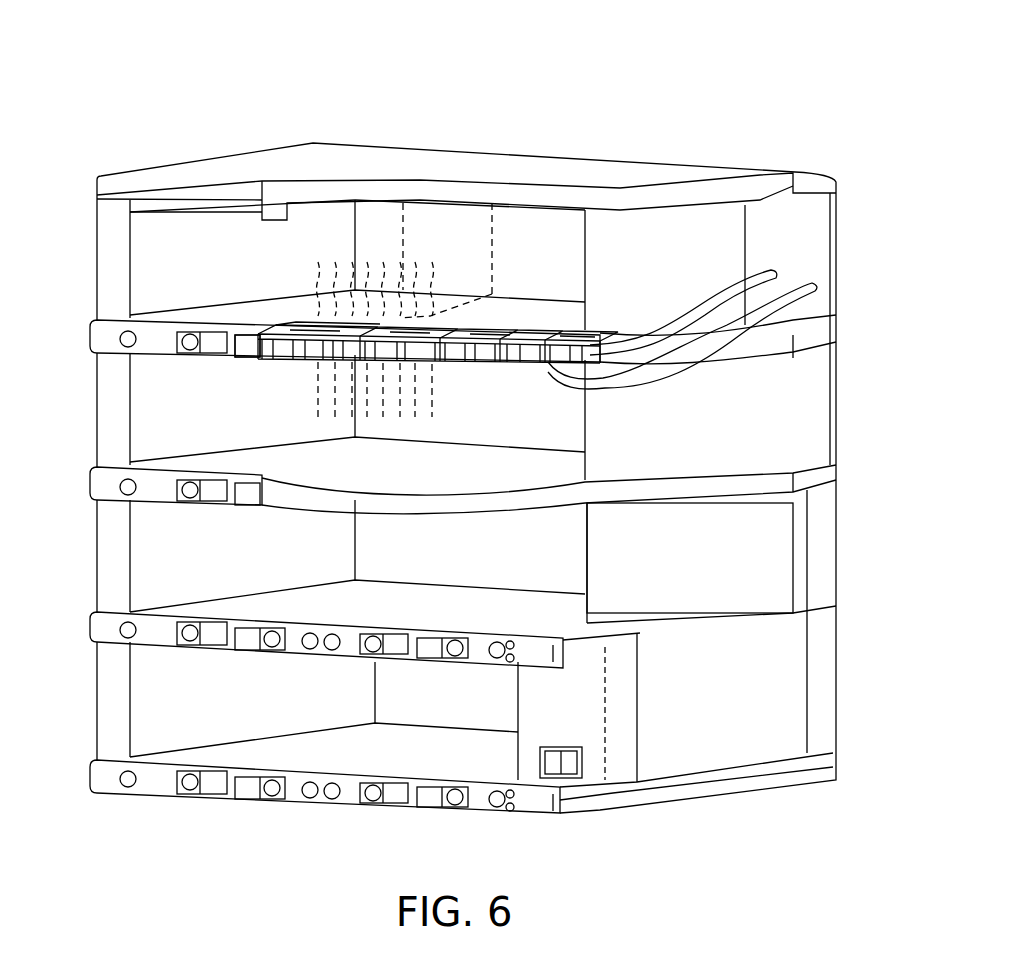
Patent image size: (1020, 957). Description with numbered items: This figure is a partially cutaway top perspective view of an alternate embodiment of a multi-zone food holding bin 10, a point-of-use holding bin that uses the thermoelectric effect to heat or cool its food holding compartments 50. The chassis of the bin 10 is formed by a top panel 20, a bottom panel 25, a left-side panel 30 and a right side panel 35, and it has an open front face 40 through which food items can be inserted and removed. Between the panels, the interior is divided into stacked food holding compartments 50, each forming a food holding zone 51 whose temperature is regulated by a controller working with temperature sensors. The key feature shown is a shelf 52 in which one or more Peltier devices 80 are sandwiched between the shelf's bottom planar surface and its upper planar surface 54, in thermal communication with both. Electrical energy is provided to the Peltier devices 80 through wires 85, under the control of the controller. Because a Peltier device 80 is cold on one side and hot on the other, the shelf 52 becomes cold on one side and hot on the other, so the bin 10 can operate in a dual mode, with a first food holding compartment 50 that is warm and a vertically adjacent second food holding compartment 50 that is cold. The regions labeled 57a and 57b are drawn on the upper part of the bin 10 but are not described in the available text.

The bin 10 is at (628, 93).
The top panel 20 is at (682, 170).
The bottom panel 25 is at (707, 797).
The left-side panel 30 is at (93, 247).
The right side panel 35 is at (773, 660).
The open front face 40 is at (190, 838).
The food holding compartment 50 is at (480, 251).
The food holding zone 51 is at (538, 313).
The shelf 52 is at (252, 317).
The upper planar surface 54 is at (228, 360).
The back wall panel 57a is at (307, 230).
The back wall panel 57b is at (523, 237).
The Peltier device 80 is at (352, 360).
The wires 85 is at (780, 262).